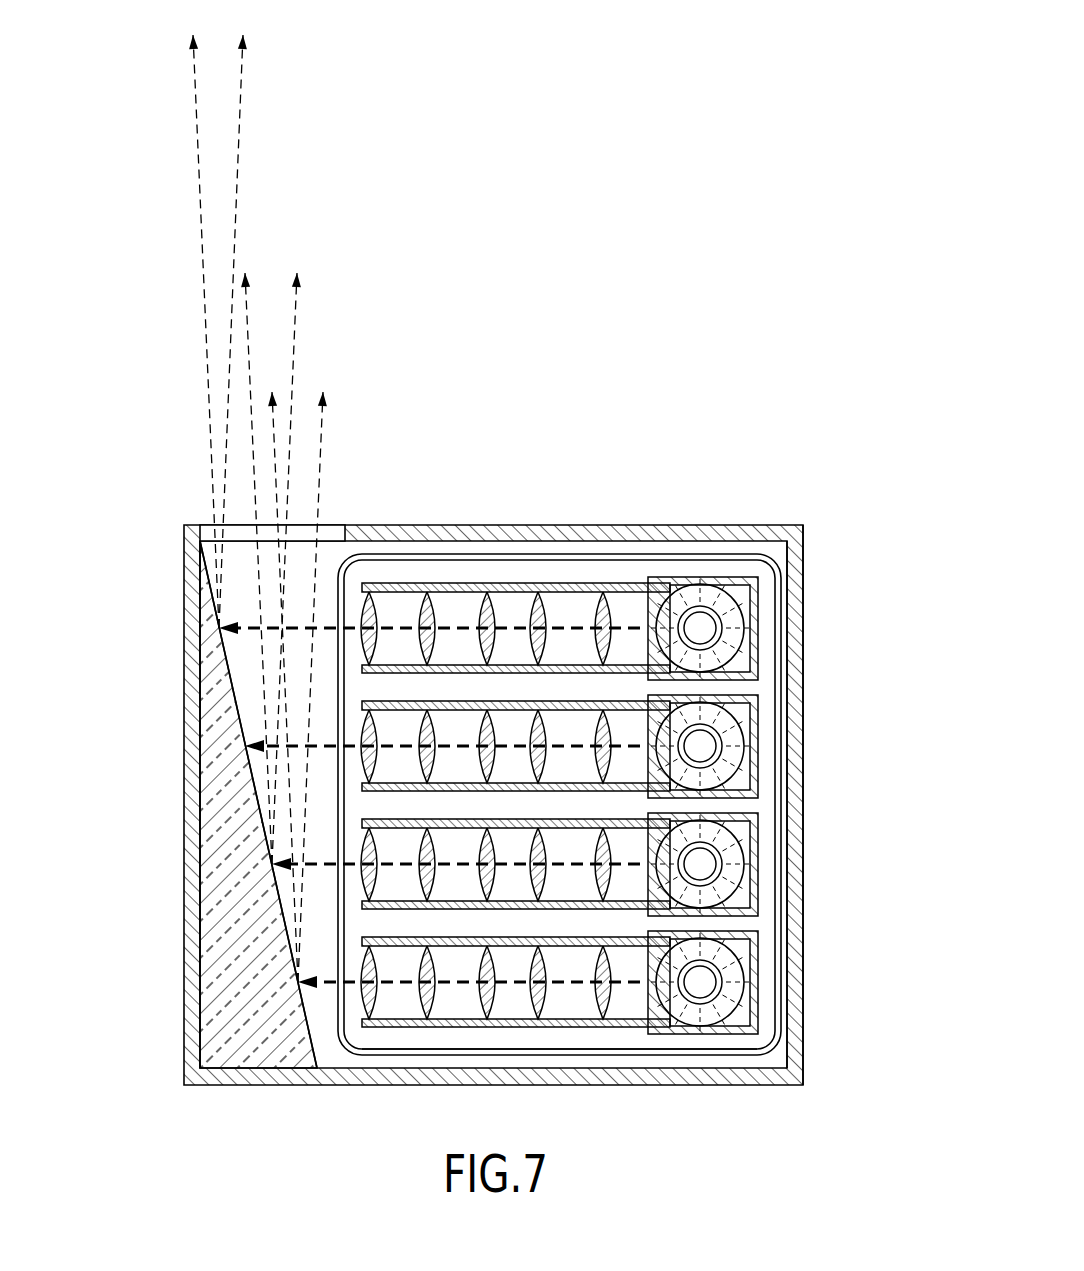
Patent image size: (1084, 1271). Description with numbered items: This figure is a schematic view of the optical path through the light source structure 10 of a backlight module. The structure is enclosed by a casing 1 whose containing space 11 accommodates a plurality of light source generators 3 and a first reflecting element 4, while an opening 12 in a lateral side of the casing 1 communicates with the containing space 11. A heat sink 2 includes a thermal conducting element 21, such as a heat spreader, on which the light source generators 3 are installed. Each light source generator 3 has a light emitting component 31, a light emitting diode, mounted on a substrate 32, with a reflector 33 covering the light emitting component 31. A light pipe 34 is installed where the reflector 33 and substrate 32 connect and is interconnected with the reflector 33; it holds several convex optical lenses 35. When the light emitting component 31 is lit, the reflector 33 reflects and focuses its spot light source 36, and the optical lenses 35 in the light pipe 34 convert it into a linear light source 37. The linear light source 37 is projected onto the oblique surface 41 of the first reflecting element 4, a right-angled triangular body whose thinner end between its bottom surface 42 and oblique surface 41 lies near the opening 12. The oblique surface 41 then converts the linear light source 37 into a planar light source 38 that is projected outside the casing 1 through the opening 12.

The casing 1 is at (795, 995).
The heat sink 2 is at (790, 760).
The light source generator 3 is at (732, 575).
The first reflecting element 4 is at (217, 728).
The light source structure 10 is at (835, 924).
The containing space 11 is at (778, 1056).
The opening 12 is at (233, 528).
The thermal conducting element 21 is at (768, 800).
The light emitting component 31 is at (700, 628).
The substrate 32 is at (710, 588).
The reflector 33 is at (735, 580).
The light pipe 34 is at (480, 615).
The optical lens 35 is at (440, 592).
The spot light source 36 is at (653, 617).
The linear light source 37 is at (508, 617).
The planar light source 38 is at (205, 332).
The oblique surface 41 is at (233, 700).
The bottom surface 42 is at (195, 845).